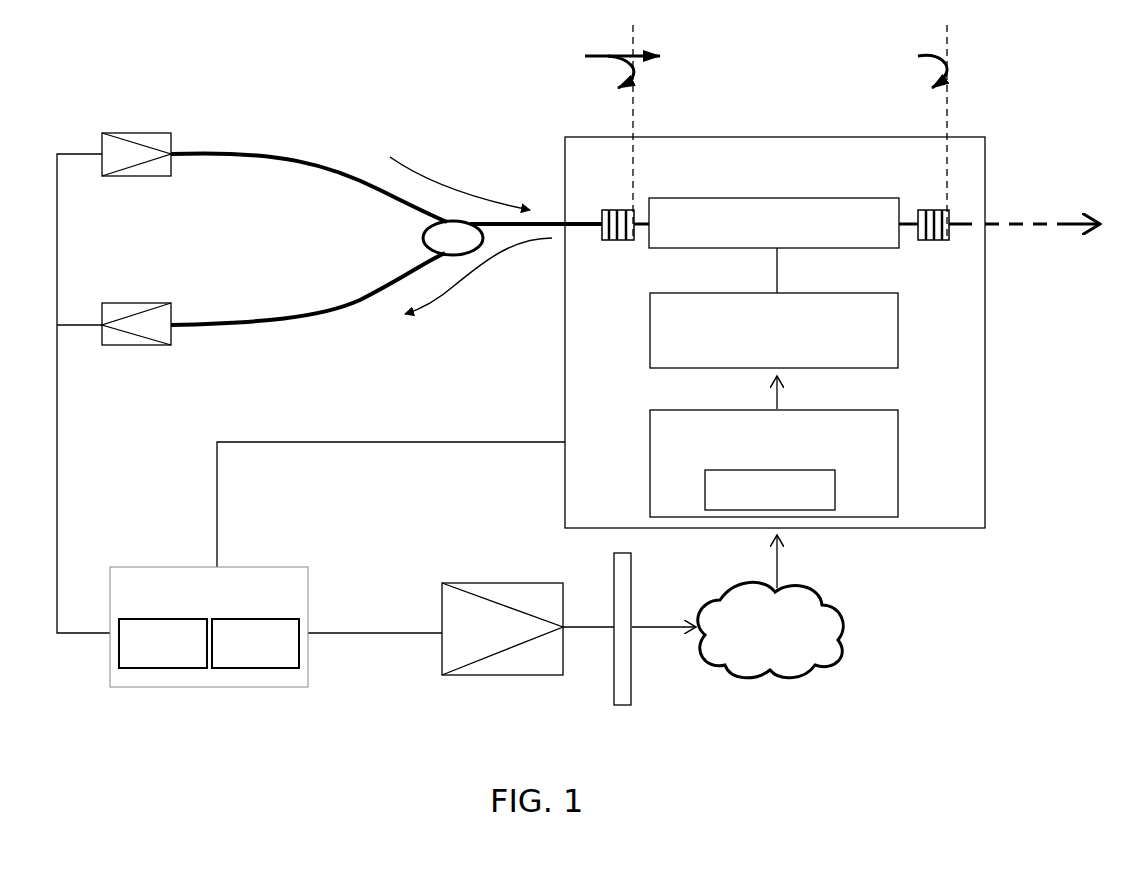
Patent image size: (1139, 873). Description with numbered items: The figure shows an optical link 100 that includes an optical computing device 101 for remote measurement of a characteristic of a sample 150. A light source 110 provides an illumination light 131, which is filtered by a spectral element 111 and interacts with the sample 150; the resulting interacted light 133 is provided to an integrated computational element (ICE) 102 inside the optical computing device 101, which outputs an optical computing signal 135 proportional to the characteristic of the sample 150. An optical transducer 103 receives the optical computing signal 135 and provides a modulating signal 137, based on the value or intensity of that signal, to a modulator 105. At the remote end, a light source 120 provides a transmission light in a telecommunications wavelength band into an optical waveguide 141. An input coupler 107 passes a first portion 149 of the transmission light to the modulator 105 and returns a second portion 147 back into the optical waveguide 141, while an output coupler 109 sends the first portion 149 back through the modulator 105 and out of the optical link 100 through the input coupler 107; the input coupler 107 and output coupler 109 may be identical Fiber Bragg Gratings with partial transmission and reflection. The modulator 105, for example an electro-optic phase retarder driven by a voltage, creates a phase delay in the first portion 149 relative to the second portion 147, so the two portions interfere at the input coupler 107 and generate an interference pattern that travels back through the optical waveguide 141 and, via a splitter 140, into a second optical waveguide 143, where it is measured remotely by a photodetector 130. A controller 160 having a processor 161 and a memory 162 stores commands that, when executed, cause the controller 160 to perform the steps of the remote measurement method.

The optical link 100 is at (965, 476).
The optical computing device 101 is at (650, 465).
The integrated computational element (ICE) 102 is at (806, 505).
The optical transducer 103 is at (650, 345).
The modulator 105 is at (815, 198).
The input coupler 107 is at (618, 208).
The output coupler 109 is at (938, 208).
The light source 110 is at (506, 642).
The spectral element 111 is at (632, 603).
The light source 120 is at (140, 133).
The photodetector 130 is at (125, 345).
The illumination light 131 is at (665, 628).
The interacted light 133 is at (777, 560).
The optical computing signal 135 is at (777, 393).
The modulating signal 137 is at (777, 270).
The splitter 140 is at (423, 236).
The optical waveguide 141 is at (245, 156).
The optical waveguide 143 is at (305, 310).
The second portion of transmission light 147 is at (608, 88).
The first portion of transmission light 149 is at (924, 88).
The sample 150 is at (794, 645).
The controller 160 is at (232, 609).
The processor 161 is at (163, 643).
The memory 162 is at (255, 643).